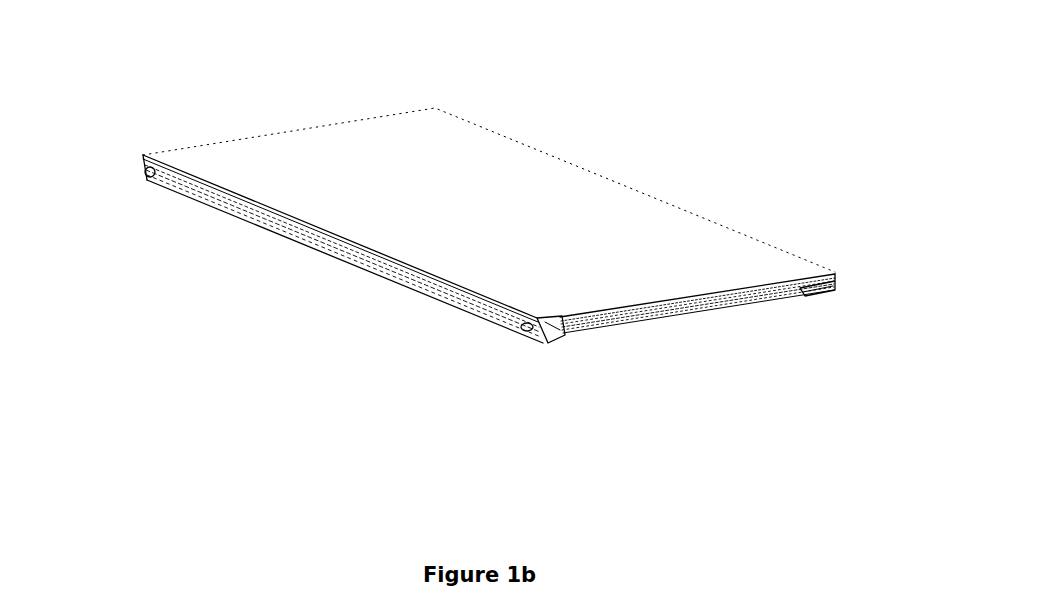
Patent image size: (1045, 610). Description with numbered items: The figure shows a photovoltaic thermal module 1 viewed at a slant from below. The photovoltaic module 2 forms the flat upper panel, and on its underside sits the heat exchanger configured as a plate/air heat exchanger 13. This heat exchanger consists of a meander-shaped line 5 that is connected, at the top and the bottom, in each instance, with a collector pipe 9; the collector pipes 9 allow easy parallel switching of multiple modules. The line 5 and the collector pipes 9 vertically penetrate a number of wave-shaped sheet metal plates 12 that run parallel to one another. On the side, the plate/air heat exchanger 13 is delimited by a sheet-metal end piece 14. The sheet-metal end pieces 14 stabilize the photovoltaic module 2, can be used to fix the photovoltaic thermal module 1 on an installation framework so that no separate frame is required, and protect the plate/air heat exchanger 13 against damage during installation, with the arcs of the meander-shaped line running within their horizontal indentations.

The photovoltaic thermal module 1 is at (462, 246).
The photovoltaic module 2 is at (548, 188).
The meander-shaped line 5 is at (397, 266).
The collector pipe 9 is at (143, 173).
The wave-shaped sheet metal plate 12 is at (722, 302).
The plate/air heat exchanger 13 is at (663, 323).
The sheet-metal end piece 14 is at (553, 342).